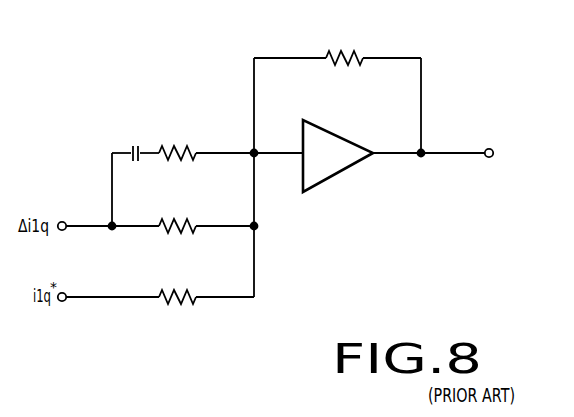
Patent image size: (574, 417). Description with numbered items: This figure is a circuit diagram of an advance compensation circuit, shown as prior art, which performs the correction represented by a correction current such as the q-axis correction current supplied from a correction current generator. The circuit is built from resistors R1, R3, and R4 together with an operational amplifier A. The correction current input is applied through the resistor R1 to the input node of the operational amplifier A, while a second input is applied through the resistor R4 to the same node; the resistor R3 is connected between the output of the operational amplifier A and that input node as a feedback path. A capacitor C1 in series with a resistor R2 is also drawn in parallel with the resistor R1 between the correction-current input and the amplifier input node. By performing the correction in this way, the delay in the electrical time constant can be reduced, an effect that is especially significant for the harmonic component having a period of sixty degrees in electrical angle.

The capacitor C1 is at (135, 141).
The resistor R1 is at (177, 214).
The resistor R2 is at (177, 141).
The resistor R3 is at (344, 46).
The resistor R4 is at (177, 285).
The operational amplifier A is at (338, 156).